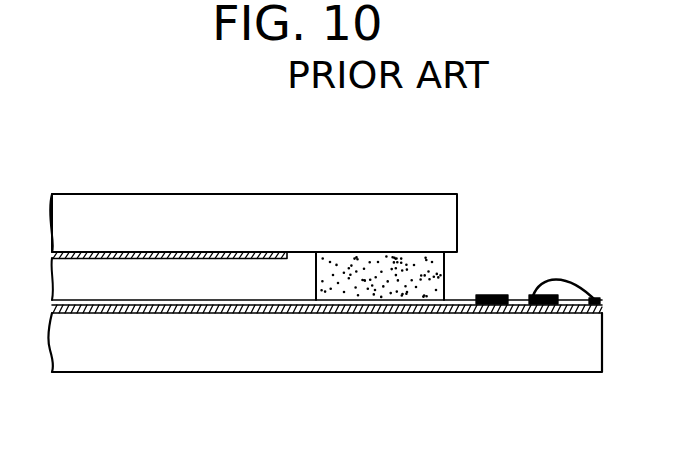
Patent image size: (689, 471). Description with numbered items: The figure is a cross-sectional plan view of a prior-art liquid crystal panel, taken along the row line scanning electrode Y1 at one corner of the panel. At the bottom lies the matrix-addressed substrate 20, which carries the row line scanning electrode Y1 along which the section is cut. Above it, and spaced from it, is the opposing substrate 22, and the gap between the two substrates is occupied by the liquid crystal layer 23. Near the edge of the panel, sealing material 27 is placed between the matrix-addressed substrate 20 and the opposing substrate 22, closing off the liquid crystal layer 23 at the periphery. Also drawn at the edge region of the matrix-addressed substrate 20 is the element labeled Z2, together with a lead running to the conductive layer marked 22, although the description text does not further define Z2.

The matrix-addressed substrate 20 is at (180, 374).
The opposing substrate 22 is at (219, 200).
The liquid crystal layer 23 is at (84, 273).
The sealing material 27 is at (366, 258).
The contact pad Z2 is at (538, 293).
The row line scanning electrode Y1 is at (513, 308).